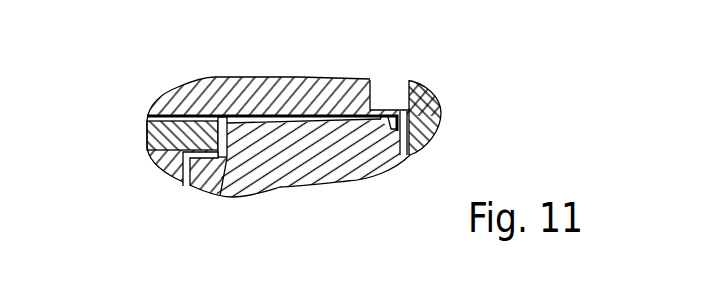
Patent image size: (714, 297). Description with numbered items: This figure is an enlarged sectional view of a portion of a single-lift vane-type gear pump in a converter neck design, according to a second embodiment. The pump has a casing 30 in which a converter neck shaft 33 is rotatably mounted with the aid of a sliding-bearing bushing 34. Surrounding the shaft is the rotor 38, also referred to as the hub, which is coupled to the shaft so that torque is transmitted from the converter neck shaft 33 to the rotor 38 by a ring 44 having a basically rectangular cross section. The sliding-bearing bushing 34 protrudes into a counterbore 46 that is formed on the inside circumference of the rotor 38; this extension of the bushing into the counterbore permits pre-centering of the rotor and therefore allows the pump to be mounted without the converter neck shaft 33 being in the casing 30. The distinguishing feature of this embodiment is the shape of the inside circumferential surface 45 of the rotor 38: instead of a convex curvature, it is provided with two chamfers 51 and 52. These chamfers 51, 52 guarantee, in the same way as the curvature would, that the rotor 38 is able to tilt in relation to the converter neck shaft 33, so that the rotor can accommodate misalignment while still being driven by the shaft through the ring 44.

The casing 30 is at (163, 172).
The converter neck shaft 33 is at (252, 103).
The sliding-bearing bushing 34 is at (146, 133).
The rotor 38 is at (297, 165).
The ring 44 is at (426, 112).
The inside circumferential surface 45 is at (305, 116).
The counterbore 46 is at (220, 158).
The chamfer 51 is at (243, 120).
The chamfer 52 is at (387, 130).